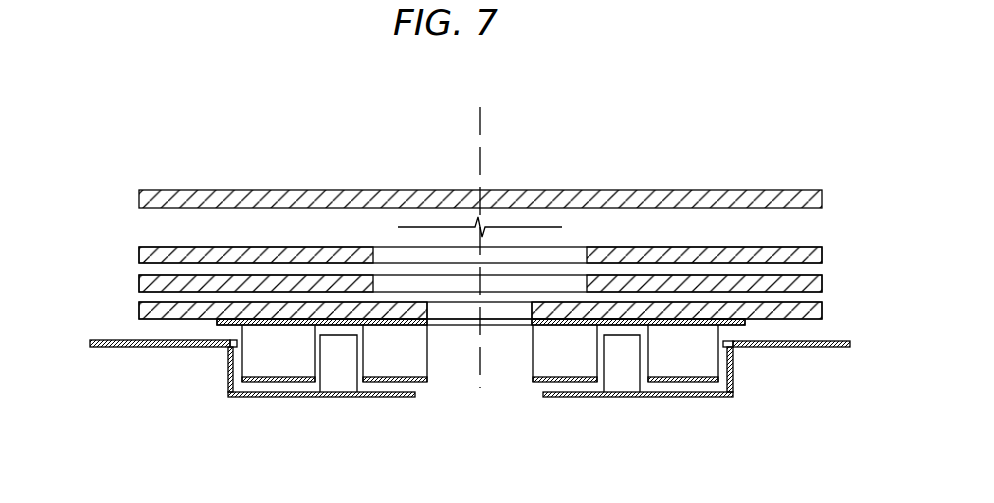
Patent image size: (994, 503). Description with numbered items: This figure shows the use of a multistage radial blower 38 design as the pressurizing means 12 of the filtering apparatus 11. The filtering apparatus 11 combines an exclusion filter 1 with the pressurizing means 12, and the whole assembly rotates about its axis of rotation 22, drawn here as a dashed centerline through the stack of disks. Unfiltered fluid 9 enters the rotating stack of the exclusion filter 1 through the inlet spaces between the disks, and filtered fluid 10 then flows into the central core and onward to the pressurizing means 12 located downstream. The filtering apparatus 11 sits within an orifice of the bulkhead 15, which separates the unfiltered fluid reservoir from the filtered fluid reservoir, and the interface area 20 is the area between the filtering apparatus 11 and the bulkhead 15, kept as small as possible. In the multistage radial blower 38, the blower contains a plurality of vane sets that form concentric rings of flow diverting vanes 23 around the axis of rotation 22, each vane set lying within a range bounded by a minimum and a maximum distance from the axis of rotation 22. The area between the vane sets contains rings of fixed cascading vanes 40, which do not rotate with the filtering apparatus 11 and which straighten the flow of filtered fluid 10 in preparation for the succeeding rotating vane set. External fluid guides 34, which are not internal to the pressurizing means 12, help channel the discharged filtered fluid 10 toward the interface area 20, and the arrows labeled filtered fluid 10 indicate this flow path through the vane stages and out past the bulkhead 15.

The exclusion filter 1 is at (135, 190).
The unfiltered fluid 9 is at (795, 228).
The filtered fluid 10 is at (480, 452).
The filtering apparatus 11 is at (220, 393).
The pressurizing means 12 is at (163, 359).
The multistage radial blower 38 is at (217, 322).
The bulkhead 15 is at (800, 349).
The interface area 20 is at (240, 344).
The axis of rotation 22 is at (480, 125).
The flow diverting vanes 23 is at (398, 368).
The external fluid guides 34 is at (280, 398).
The fixed cascading vanes 40 is at (337, 381).